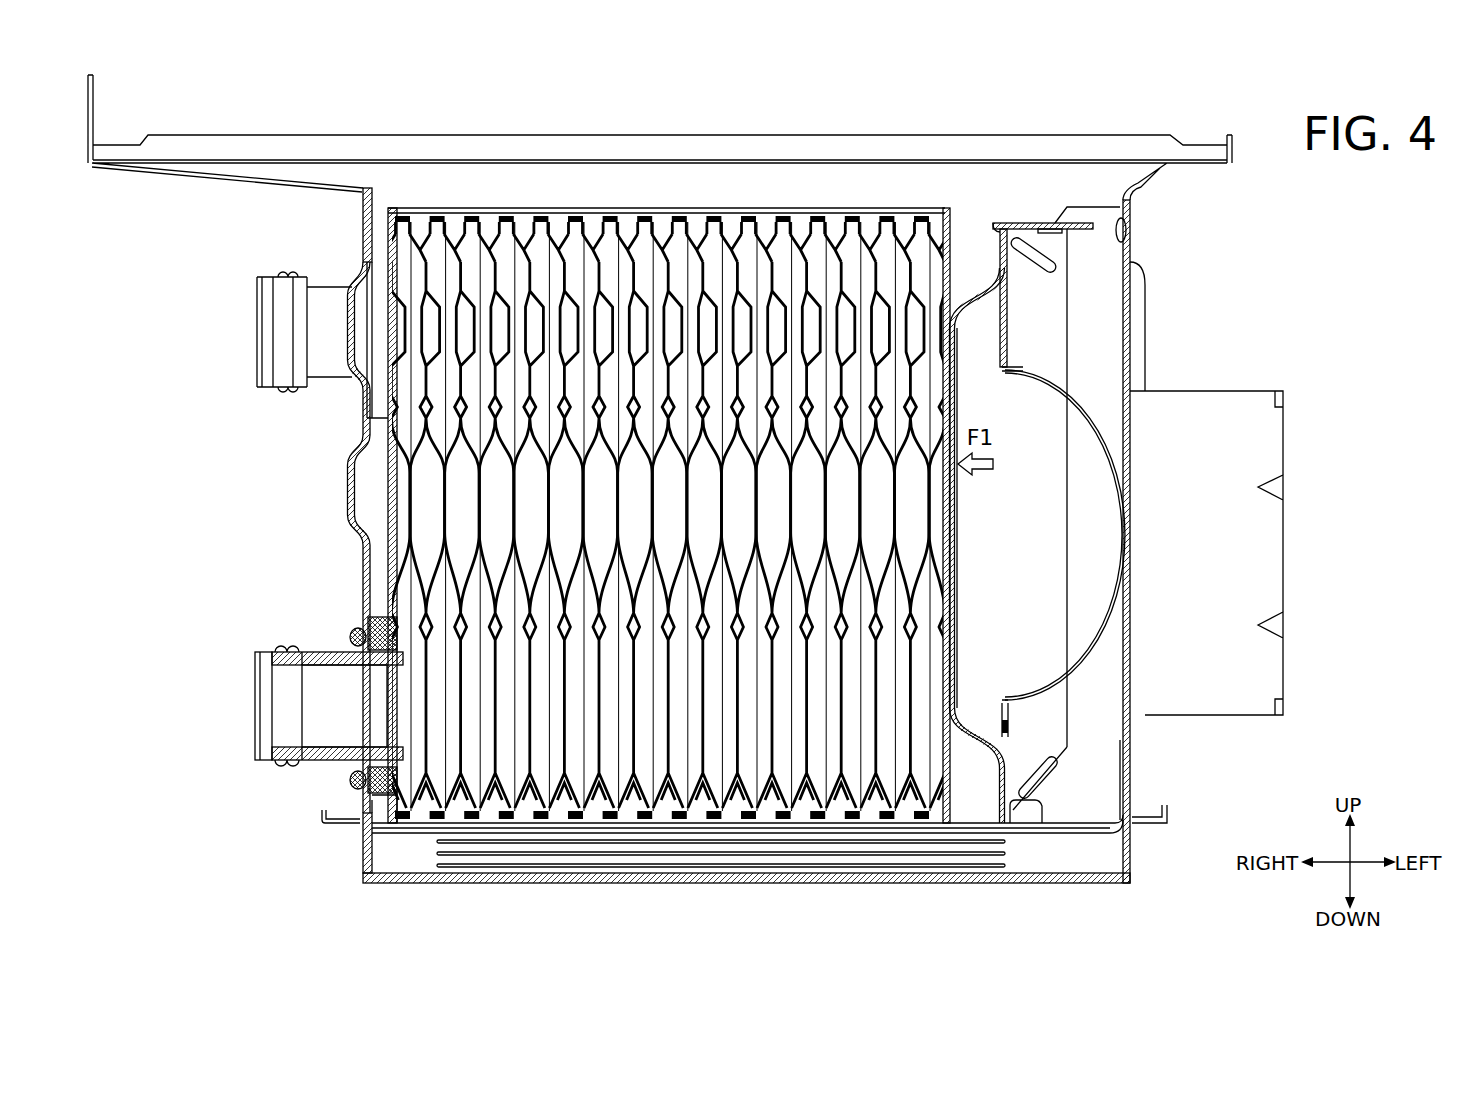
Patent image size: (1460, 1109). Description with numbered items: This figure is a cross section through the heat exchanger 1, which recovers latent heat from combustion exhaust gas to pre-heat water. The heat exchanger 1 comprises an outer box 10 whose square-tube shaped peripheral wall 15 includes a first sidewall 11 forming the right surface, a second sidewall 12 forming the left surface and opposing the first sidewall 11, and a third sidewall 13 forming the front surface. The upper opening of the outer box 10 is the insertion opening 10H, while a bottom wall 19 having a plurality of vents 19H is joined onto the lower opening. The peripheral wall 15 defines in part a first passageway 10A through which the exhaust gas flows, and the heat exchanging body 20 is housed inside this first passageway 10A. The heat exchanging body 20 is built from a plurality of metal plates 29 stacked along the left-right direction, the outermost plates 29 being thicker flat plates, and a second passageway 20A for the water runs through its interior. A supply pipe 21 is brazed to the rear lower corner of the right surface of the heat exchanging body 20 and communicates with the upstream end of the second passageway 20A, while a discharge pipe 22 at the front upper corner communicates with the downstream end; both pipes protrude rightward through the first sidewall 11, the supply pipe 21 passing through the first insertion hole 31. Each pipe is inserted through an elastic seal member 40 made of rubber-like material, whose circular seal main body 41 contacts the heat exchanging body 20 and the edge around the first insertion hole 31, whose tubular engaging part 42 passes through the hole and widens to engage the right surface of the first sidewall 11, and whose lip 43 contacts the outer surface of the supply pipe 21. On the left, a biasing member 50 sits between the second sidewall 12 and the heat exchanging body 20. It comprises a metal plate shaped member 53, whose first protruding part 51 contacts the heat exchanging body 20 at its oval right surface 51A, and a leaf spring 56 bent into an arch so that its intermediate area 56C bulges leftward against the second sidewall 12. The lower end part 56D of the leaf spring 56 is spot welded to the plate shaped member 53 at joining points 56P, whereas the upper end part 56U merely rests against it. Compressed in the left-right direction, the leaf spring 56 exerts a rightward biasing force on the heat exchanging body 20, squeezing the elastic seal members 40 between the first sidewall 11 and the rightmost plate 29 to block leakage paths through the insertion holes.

The heat exchanger 1 is at (682, 502).
The outer box 10 is at (255, 128).
The insertion opening 10H is at (372, 190).
The first passageway 10A is at (375, 470).
The first sidewall 11 is at (368, 412).
The second sidewall 12 is at (1130, 307).
The third sidewall 13 is at (1097, 372).
The peripheral wall 15 is at (1135, 250).
The bottom wall 19 is at (1048, 850).
The vents 19H is at (640, 868).
The heat exchanging body 20 is at (657, 200).
The second passageway 20A is at (817, 720).
The supply pipe 21 is at (265, 705).
The discharge pipe 22 is at (265, 325).
The metal plates 29 is at (828, 237).
The first insertion hole 31 is at (366, 652).
The elastic seal member 40 is at (380, 800).
The seal main body 41 is at (380, 618).
The engaging part 42 is at (350, 775).
The lip 43 is at (338, 757).
The biasing member 50 is at (1033, 212).
The first protruding part 51 is at (997, 545).
The right surface of first protruding part 51A is at (940, 547).
The plate shaped member 53 is at (995, 215).
The leaf spring 56 is at (1128, 529).
The intermediate area 56C is at (1118, 583).
The upper end part 56U is at (1003, 330).
The lower end part 56D is at (1010, 740).
The joining points 56P is at (1010, 725).